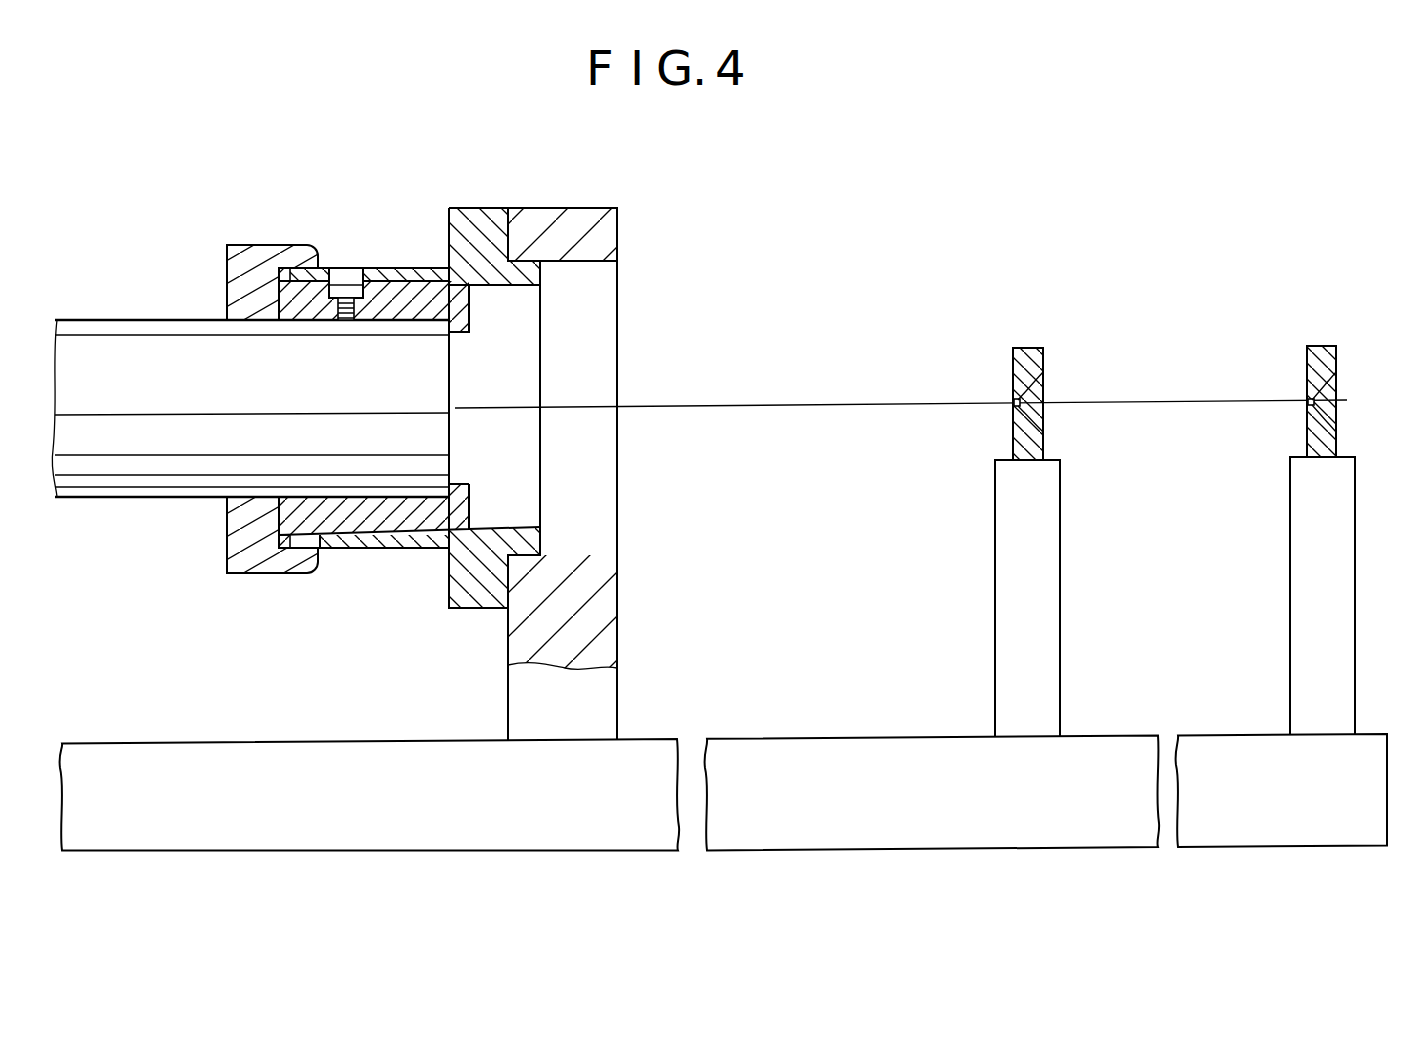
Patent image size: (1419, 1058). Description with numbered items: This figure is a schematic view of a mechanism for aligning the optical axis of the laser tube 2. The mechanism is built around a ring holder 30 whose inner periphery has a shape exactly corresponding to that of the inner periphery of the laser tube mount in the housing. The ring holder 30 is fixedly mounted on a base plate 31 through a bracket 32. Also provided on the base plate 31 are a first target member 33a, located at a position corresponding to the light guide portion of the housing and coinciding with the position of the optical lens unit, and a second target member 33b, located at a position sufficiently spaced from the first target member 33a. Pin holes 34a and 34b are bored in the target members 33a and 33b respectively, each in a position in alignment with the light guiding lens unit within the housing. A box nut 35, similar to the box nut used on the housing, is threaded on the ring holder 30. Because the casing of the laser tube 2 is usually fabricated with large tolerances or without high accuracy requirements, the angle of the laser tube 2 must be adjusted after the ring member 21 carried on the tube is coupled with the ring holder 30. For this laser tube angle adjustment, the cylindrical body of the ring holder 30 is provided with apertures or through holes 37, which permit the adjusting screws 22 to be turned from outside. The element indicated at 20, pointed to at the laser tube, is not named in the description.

The laser tube 2 is at (110, 330).
The roll 20 is at (117, 512).
The ring member 21 is at (410, 292).
The adjusting screws 22 is at (279, 298).
The ring holder 30 is at (474, 215).
The base plate 31 is at (619, 853).
The bracket 32 is at (607, 612).
The first target member 33a is at (1125, 446).
The second target member 33b is at (1317, 441).
The pin hole 34a is at (1015, 402).
The pin hole 34b is at (1308, 402).
The box nut 35 is at (258, 258).
The apertures or through holes 37 is at (347, 270).